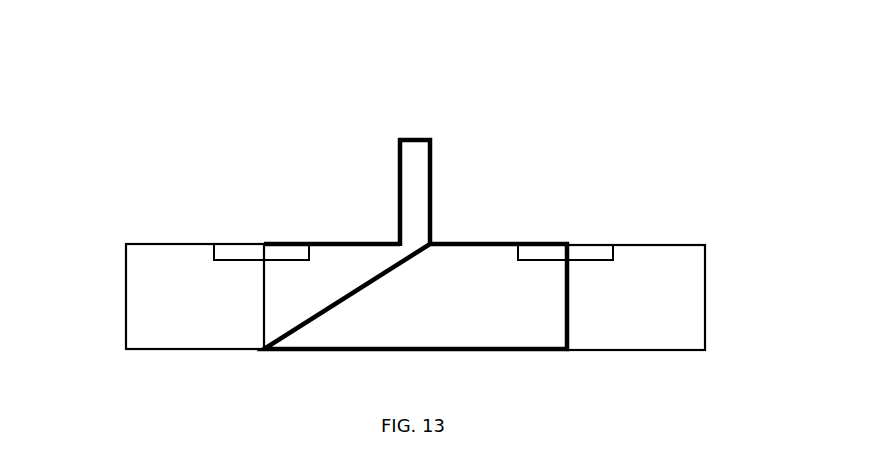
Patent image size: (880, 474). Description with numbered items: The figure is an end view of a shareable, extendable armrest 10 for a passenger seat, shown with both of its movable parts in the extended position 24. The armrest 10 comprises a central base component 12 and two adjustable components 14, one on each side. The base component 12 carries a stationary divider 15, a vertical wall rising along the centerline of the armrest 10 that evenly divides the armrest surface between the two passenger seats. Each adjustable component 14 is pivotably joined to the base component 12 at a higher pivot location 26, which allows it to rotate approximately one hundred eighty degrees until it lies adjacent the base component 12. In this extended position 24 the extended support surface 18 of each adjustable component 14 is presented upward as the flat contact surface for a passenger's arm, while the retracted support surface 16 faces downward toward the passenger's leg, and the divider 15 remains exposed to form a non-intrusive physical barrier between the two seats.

The armrest 10 is at (645, 102).
The base component 12 is at (368, 340).
The adjustable component 14 is at (677, 275).
The divider 15 is at (418, 153).
The retracted support surface 16 is at (647, 342).
The extended support surface 18 is at (165, 240).
The extended position 24 is at (143, 117).
The pivot location 26 is at (253, 252).